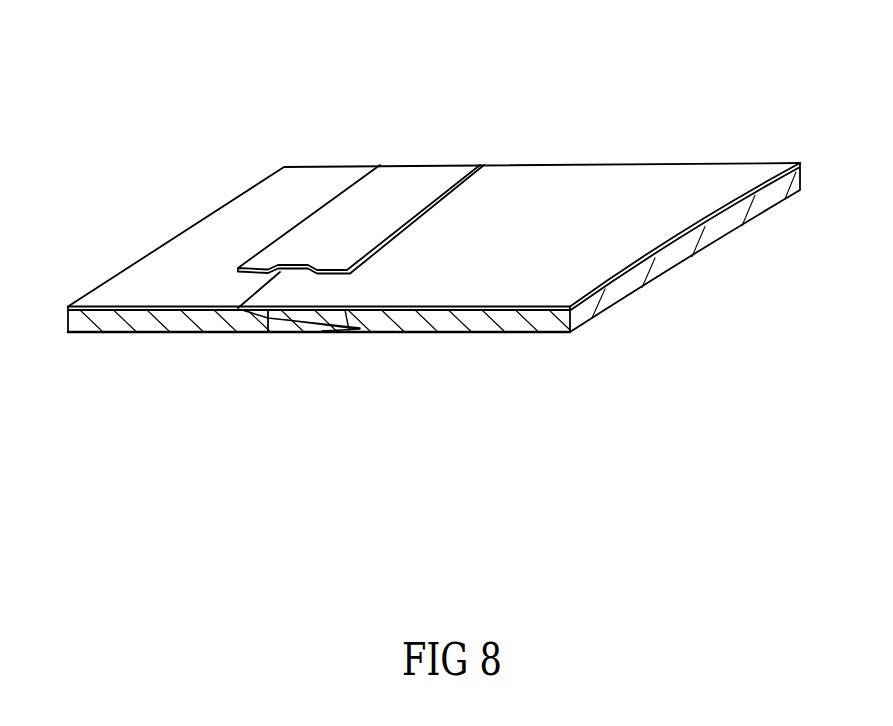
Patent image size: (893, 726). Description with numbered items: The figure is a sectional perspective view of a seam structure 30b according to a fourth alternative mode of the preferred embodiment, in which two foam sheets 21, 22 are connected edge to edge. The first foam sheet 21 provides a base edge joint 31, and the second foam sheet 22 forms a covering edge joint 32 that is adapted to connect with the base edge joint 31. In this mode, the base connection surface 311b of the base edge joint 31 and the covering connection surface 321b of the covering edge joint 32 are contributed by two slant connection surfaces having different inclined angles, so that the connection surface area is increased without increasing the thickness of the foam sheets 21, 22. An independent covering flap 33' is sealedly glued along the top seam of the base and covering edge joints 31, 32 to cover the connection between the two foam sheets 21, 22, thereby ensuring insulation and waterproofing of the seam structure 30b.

The first foam sheet 21 is at (122, 338).
The second foam sheet 22 is at (648, 296).
The seam structure 30b is at (593, 88).
The base edge joint 31 is at (323, 340).
The covering edge joint 32 is at (378, 271).
The covering flap 33' is at (393, 193).
The base connection surface 311b is at (268, 333).
The covering connection surface 321b is at (353, 307).